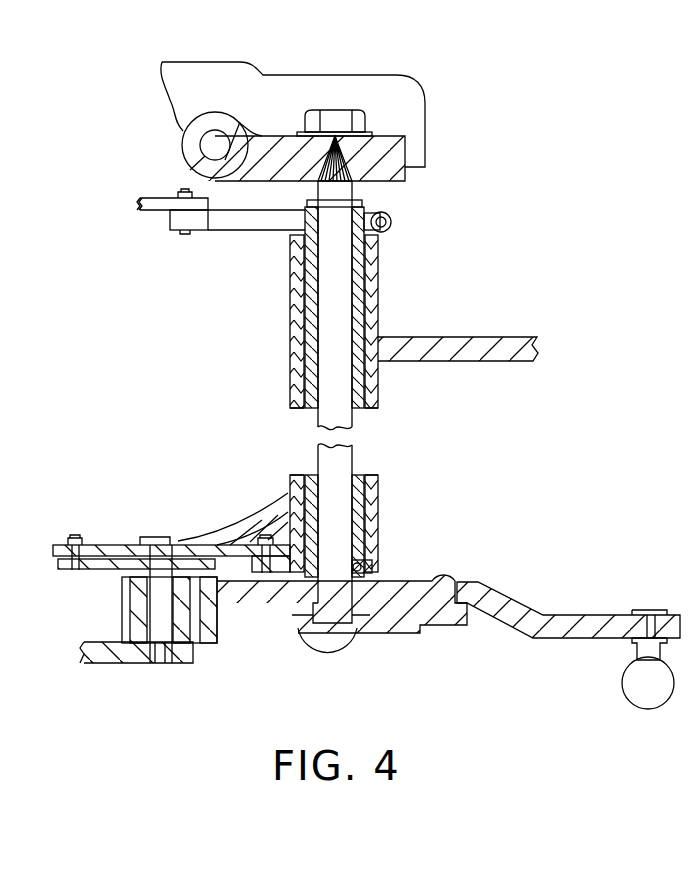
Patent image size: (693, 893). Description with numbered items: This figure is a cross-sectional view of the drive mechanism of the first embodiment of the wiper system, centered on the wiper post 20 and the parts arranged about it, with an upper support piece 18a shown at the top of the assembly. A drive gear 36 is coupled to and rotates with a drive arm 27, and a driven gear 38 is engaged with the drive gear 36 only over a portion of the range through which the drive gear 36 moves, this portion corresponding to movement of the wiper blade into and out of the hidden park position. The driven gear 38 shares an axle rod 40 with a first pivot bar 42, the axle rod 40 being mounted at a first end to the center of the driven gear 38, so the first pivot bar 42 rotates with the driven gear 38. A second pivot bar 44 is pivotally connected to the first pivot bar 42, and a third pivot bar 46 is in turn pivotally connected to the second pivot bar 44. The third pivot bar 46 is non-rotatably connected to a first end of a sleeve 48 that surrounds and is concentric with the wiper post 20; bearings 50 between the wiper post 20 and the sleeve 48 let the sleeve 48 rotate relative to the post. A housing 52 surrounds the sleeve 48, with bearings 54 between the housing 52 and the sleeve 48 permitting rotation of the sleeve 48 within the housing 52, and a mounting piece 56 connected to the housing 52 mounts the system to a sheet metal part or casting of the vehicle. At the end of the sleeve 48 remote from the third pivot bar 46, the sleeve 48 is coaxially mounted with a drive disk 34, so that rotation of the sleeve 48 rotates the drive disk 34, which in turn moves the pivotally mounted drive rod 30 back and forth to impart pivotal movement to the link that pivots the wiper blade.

The upper support bracket 18a is at (222, 67).
The wiper post 20 is at (335, 347).
The drive arm 27 is at (573, 615).
The drive rod 30 is at (158, 204).
The drive disk 34 is at (208, 220).
The drive gear 36 is at (413, 625).
The driven gear 38 is at (140, 622).
The axle rod 40 is at (157, 627).
The first pivot bar 42 is at (102, 566).
The second pivot bar 44 is at (108, 546).
The third pivot bar 46 is at (280, 538).
The sleeve 48 is at (355, 477).
The bearings 50 is at (376, 240).
The housing 52 is at (377, 307).
The bearings 54 is at (290, 258).
The mounting piece 56 is at (512, 340).